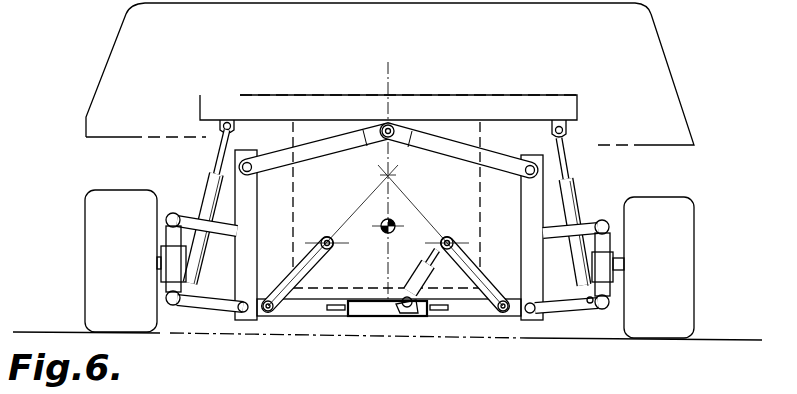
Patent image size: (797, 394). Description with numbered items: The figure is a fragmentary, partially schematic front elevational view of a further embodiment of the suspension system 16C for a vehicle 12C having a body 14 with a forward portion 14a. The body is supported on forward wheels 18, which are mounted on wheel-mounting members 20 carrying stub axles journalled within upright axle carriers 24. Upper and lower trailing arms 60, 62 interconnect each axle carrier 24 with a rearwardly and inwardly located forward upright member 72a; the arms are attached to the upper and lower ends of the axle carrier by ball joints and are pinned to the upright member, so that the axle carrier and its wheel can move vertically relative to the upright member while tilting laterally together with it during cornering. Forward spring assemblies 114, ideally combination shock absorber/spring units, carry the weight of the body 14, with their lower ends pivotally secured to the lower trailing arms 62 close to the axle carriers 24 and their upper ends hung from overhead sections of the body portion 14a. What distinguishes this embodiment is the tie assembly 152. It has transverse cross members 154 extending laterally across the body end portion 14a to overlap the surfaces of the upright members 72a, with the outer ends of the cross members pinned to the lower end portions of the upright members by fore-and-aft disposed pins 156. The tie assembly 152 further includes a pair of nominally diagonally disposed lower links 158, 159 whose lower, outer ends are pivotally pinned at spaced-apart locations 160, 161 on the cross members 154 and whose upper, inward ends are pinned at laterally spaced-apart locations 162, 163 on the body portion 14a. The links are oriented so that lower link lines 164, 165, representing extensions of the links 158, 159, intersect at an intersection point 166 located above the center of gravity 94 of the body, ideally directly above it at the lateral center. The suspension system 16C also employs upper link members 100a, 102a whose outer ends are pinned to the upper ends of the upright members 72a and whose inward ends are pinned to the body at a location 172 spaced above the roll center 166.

The vehicle 12C is at (88, 50).
The body 14 is at (658, 20).
The forward portion 14a is at (430, 94).
The suspension system 16C is at (470, 326).
The forward wheels 18 is at (696, 238).
The wheel-mounting members 20 is at (608, 322).
The axle carriers 24 is at (612, 290).
The upper trailing arm 60 is at (600, 222).
The lower trailing arm 62 is at (583, 305).
The forward upright members 72a is at (523, 211).
The center of gravity 94 is at (385, 233).
The upper link member 100a is at (332, 143).
The upper link member 102a is at (437, 144).
The forward spring assemblies 114 is at (207, 149).
The tie assembly 152 is at (380, 326).
The transverse cross members 154 is at (447, 318).
The pins 156 is at (534, 322).
The lower link 158 is at (286, 273).
The lower link 159 is at (487, 273).
The pivot location 160 is at (270, 312).
The pivot location 161 is at (500, 318).
The pivot location 162 is at (327, 236).
The pivot location 163 is at (462, 222).
The lower link line 164 is at (366, 200).
The lower link line 165 is at (413, 207).
The intersection point 166 is at (391, 177).
The pivot location 172 is at (386, 124).